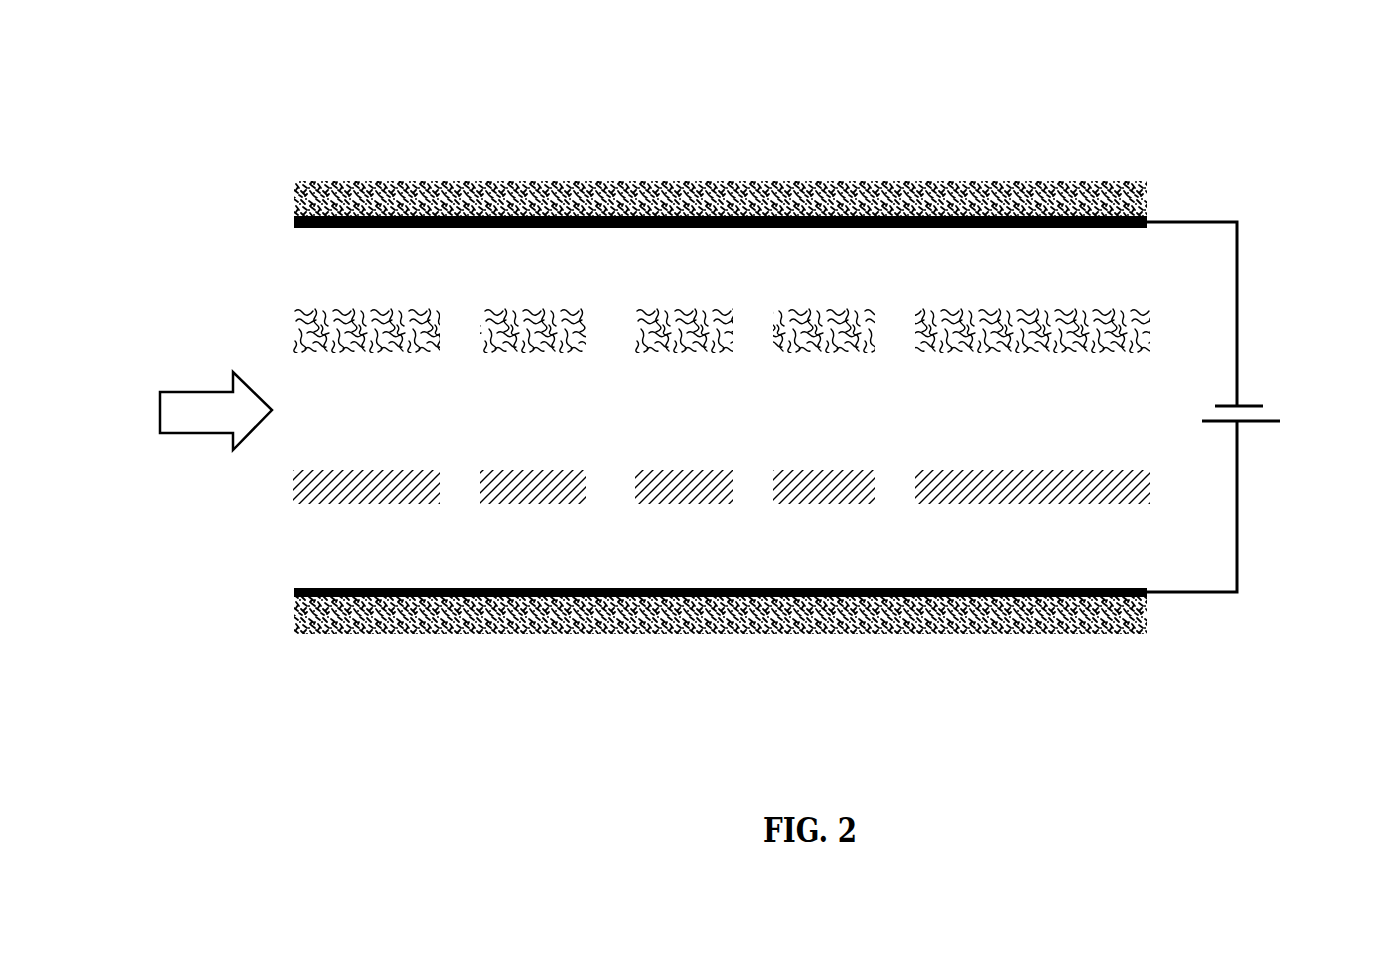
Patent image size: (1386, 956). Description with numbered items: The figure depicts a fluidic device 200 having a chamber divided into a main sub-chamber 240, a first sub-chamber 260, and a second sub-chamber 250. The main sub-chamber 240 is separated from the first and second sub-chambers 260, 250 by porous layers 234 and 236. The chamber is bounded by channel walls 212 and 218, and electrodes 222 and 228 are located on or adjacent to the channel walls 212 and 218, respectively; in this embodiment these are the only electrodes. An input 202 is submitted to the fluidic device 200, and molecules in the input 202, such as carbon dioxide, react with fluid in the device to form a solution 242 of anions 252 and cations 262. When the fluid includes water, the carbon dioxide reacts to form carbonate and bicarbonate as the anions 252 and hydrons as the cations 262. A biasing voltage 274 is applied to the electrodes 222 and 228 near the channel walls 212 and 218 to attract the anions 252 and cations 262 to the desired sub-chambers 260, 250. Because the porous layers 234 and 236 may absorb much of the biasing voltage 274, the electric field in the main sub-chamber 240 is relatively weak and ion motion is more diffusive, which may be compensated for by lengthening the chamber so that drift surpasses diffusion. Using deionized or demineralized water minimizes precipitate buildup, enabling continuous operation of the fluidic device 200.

The fluidic device 200 is at (197, 56).
The input 202 is at (233, 422).
The channel wall 212 is at (318, 178).
The channel wall 218 is at (322, 650).
The electrode 222 is at (286, 222).
The electrode 228 is at (286, 594).
The porous layer 234 is at (282, 305).
The porous layer 236 is at (282, 463).
The main sub-chamber 240 is at (922, 422).
The solution 242 is at (607, 372).
The second sub-chamber 250 is at (922, 566).
The anions 252 is at (679, 551).
The first sub-chamber 260 is at (922, 282).
The cations 262 is at (726, 266).
The biasing voltage 274 is at (1311, 384).